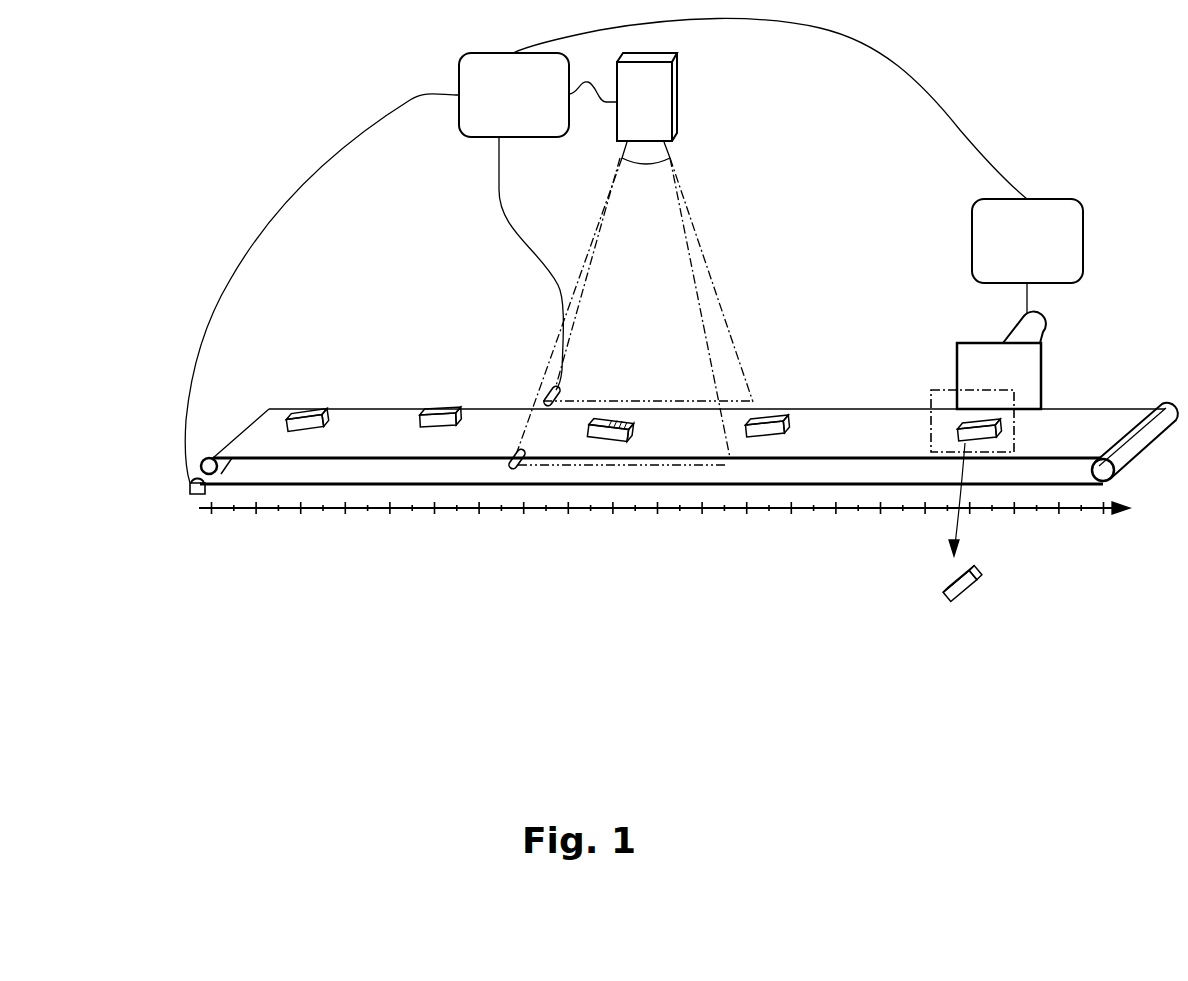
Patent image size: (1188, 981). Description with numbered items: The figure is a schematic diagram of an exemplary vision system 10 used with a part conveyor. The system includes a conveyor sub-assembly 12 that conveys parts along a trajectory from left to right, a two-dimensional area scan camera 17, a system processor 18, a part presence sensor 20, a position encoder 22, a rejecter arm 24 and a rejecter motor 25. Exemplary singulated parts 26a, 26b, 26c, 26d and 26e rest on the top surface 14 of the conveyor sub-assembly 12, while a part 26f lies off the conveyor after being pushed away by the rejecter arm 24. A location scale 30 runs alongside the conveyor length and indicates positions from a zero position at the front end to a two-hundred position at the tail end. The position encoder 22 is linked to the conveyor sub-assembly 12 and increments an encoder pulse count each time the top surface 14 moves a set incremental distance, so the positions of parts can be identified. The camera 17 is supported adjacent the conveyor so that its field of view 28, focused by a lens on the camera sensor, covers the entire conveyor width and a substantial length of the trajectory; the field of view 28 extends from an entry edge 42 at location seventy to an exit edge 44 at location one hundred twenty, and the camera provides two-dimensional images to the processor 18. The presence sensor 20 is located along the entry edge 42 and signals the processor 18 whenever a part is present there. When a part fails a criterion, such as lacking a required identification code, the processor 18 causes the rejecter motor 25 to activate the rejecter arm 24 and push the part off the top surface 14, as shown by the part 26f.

The system 10 is at (377, 115).
The conveyor sub-assembly 12 is at (1085, 410).
The top surface 14 is at (378, 424).
The two-dimensional area scan camera 17 is at (678, 103).
The system processor 18 is at (493, 53).
The part presence sensor 20 is at (512, 472).
The position encoder 22 is at (200, 496).
The rejecter arm 24 is at (1015, 372).
The rejecter motor 25 is at (1060, 199).
The part 26a is at (312, 414).
The part 26b is at (434, 410).
The part 26c is at (610, 420).
The part 26d is at (770, 420).
The part 26e is at (980, 438).
The part 26f is at (958, 600).
The field of view 28 is at (742, 433).
The location scale 30 is at (360, 510).
The entry edge 42 is at (540, 410).
The exit edge 44 is at (728, 452).